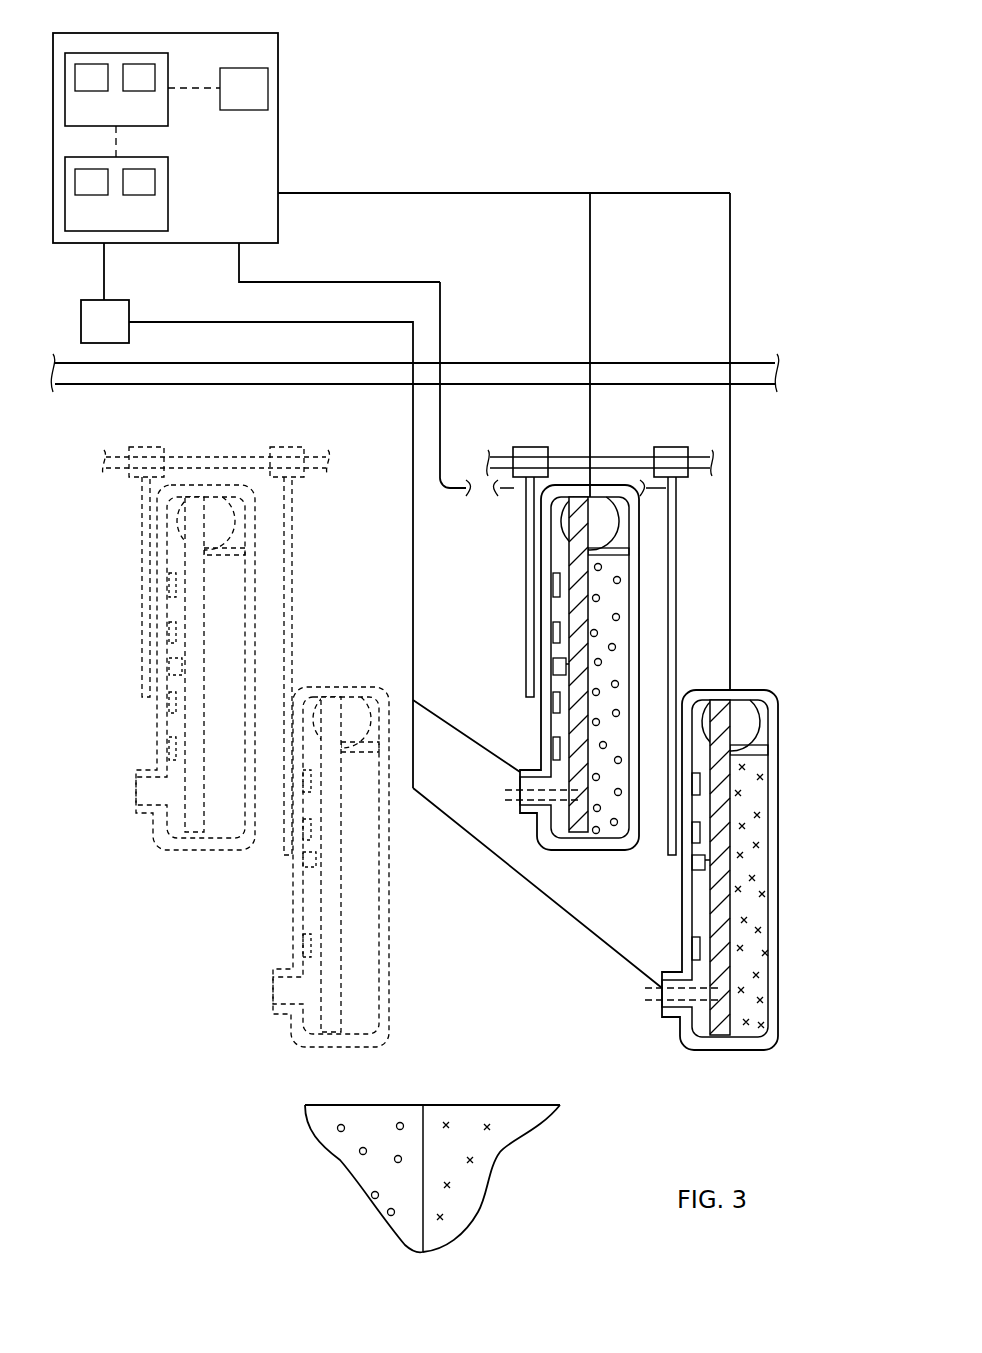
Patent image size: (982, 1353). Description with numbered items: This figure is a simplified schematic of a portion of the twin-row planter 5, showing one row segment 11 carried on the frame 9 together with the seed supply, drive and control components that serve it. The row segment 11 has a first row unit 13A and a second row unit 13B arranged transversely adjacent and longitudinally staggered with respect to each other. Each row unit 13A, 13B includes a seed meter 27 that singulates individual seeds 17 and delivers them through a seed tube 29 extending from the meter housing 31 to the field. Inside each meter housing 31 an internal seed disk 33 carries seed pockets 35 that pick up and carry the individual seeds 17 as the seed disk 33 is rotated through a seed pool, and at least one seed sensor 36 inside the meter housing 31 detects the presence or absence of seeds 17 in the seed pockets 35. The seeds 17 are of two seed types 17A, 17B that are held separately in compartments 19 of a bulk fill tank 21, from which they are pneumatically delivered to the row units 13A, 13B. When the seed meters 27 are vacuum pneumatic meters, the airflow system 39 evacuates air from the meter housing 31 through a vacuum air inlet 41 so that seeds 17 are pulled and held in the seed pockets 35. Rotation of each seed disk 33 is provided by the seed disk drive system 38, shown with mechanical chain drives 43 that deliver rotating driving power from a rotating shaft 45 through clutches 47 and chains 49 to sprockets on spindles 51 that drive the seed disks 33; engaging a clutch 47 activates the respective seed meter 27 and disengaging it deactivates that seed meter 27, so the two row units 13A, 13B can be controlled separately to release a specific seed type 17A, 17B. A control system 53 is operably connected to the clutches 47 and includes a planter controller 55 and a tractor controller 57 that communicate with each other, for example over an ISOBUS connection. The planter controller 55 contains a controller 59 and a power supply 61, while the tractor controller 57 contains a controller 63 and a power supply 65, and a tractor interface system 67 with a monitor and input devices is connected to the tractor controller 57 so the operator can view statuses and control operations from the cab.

The twin-row planter 5 is at (773, 228).
The frame 9 is at (757, 355).
The row segment 11 is at (237, 980).
The first row unit 13A is at (583, 861).
The second row unit 13B is at (722, 1059).
The seeds 17 is at (612, 742).
The first seed type 17A is at (612, 682).
The second seed type 17B is at (750, 990).
The compartments 19 is at (398, 1225).
The bulk fill tank 21 is at (432, 1200).
The seed meter 27 is at (642, 612).
The seed tube 29 is at (597, 493).
The meter housing 31 is at (597, 852).
The seed disk 33 is at (572, 685).
The seed pockets 35 is at (512, 796).
The seed sensor 36 is at (553, 585).
The seed disk drive system 38 is at (417, 411).
The airflow system 39 is at (129, 316).
The vacuum air inlet 41 is at (518, 814).
The mechanical chain drives 43 is at (517, 541).
The rotating shaft 45 is at (594, 457).
The clutches 47 is at (533, 447).
The chains 49 is at (528, 648).
The spindles 51 is at (560, 664).
The control system 53 is at (278, 120).
The planter controller 55 is at (168, 213).
The tractor controller 57 is at (168, 107).
The controller 59 is at (99, 197).
The power supply 61 is at (132, 201).
The controller 63 is at (99, 92).
The power supply 65 is at (132, 96).
The tractor interface system 67 is at (236, 68).